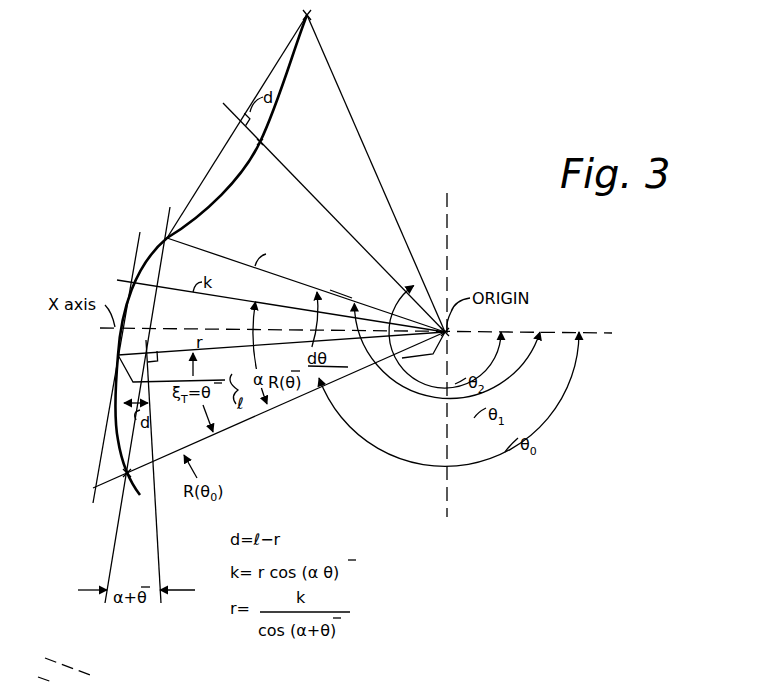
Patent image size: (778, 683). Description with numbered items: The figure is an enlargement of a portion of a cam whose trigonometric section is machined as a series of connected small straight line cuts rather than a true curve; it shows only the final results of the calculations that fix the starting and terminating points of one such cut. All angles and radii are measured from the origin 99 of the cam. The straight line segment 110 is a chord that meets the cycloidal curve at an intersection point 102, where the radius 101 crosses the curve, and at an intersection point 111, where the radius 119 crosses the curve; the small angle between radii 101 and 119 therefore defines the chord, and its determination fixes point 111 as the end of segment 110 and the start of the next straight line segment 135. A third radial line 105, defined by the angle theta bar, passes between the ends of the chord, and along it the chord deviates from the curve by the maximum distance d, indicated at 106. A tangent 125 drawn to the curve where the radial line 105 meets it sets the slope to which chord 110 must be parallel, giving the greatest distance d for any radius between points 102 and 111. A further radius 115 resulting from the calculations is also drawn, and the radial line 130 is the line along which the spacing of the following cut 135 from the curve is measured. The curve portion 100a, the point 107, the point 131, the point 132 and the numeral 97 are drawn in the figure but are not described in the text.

The fragment of adjacent figure element 97 is at (105, 682).
The origin 99 is at (447, 333).
The cam profile curve 100a is at (218, 197).
The radius 101 is at (230, 432).
The intersection point 102 is at (127, 473).
The radial line 105 is at (117, 355).
The maximum distance d 106 is at (117, 358).
The foot of perpendicular on radius line 107 is at (153, 350).
The straight line segment 110 is at (150, 328).
The intersection point 111 is at (165, 233).
The radius 115 is at (117, 279).
The radius 119 is at (341, 296).
The tangent line 125 is at (103, 445).
The radial line 130 is at (327, 207).
The point on cam profile 131 is at (262, 142).
The end point of cam profile 132 is at (303, 18).
The straight line segment 135 is at (262, 86).